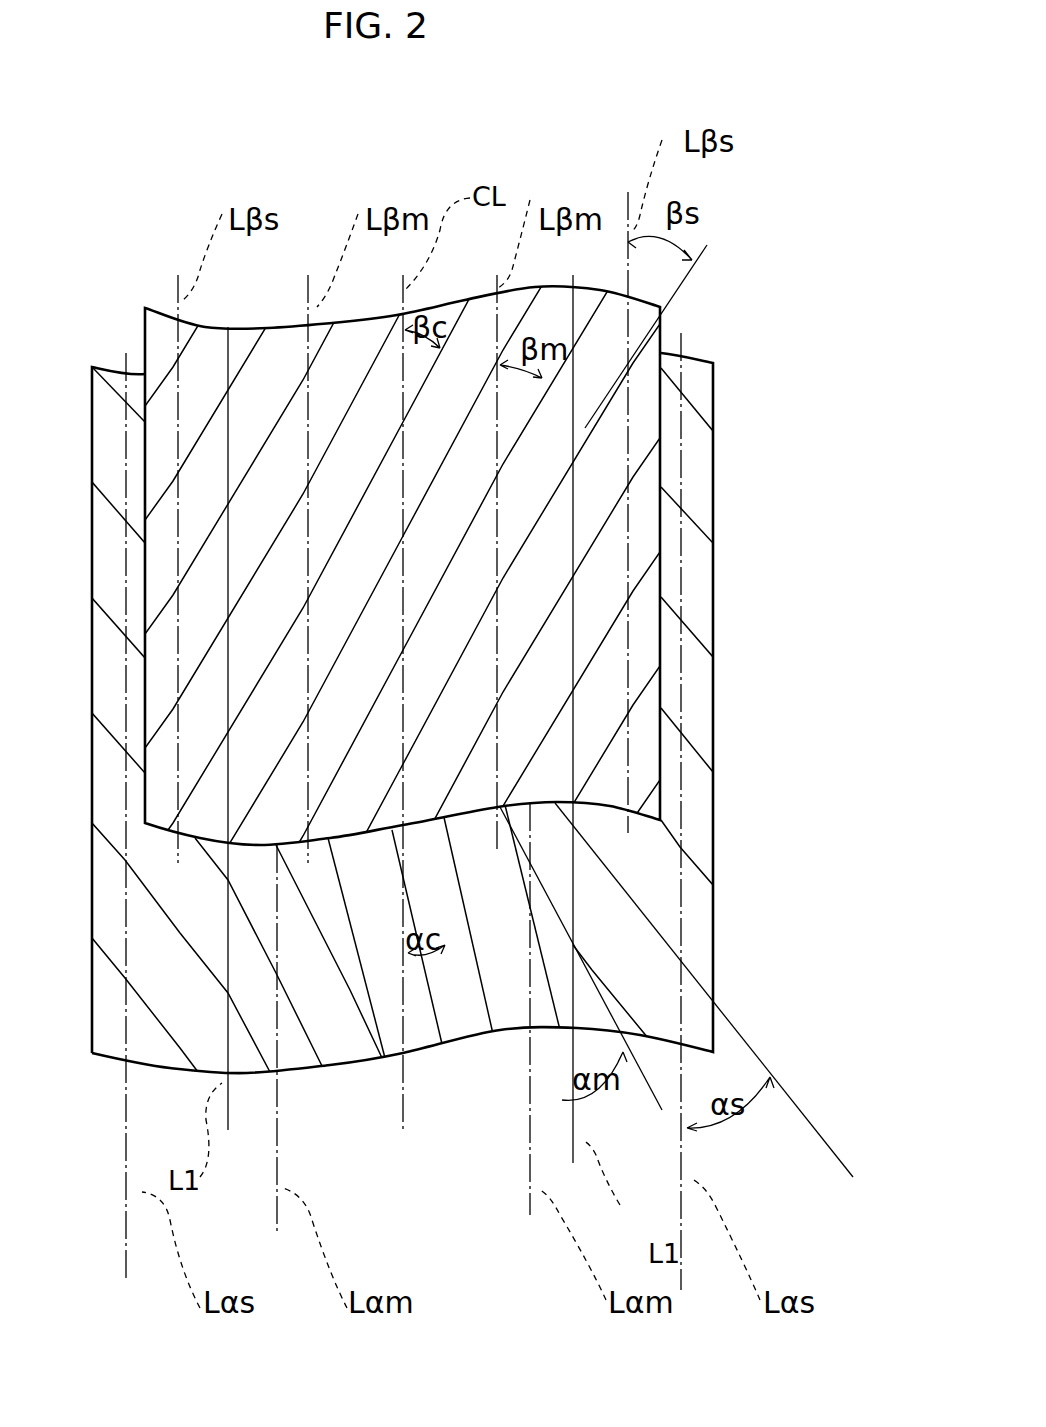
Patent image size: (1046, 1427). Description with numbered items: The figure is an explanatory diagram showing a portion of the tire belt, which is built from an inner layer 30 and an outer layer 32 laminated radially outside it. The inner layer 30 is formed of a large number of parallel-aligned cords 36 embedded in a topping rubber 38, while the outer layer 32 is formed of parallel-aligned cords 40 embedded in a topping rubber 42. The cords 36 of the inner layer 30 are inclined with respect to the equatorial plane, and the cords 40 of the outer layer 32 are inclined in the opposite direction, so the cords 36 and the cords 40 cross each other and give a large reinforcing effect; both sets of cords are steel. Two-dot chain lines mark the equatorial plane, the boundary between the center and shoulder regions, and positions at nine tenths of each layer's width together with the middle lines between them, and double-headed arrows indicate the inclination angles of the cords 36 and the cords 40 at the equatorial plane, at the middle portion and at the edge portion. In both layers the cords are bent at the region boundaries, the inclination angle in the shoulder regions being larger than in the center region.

The inner layer 30 is at (502, 713).
The outer layer 32 is at (528, 589).
The cords 36 is at (688, 824).
The topping rubber 38 is at (690, 882).
The cords 40 is at (638, 468).
The topping rubber 42 is at (615, 527).